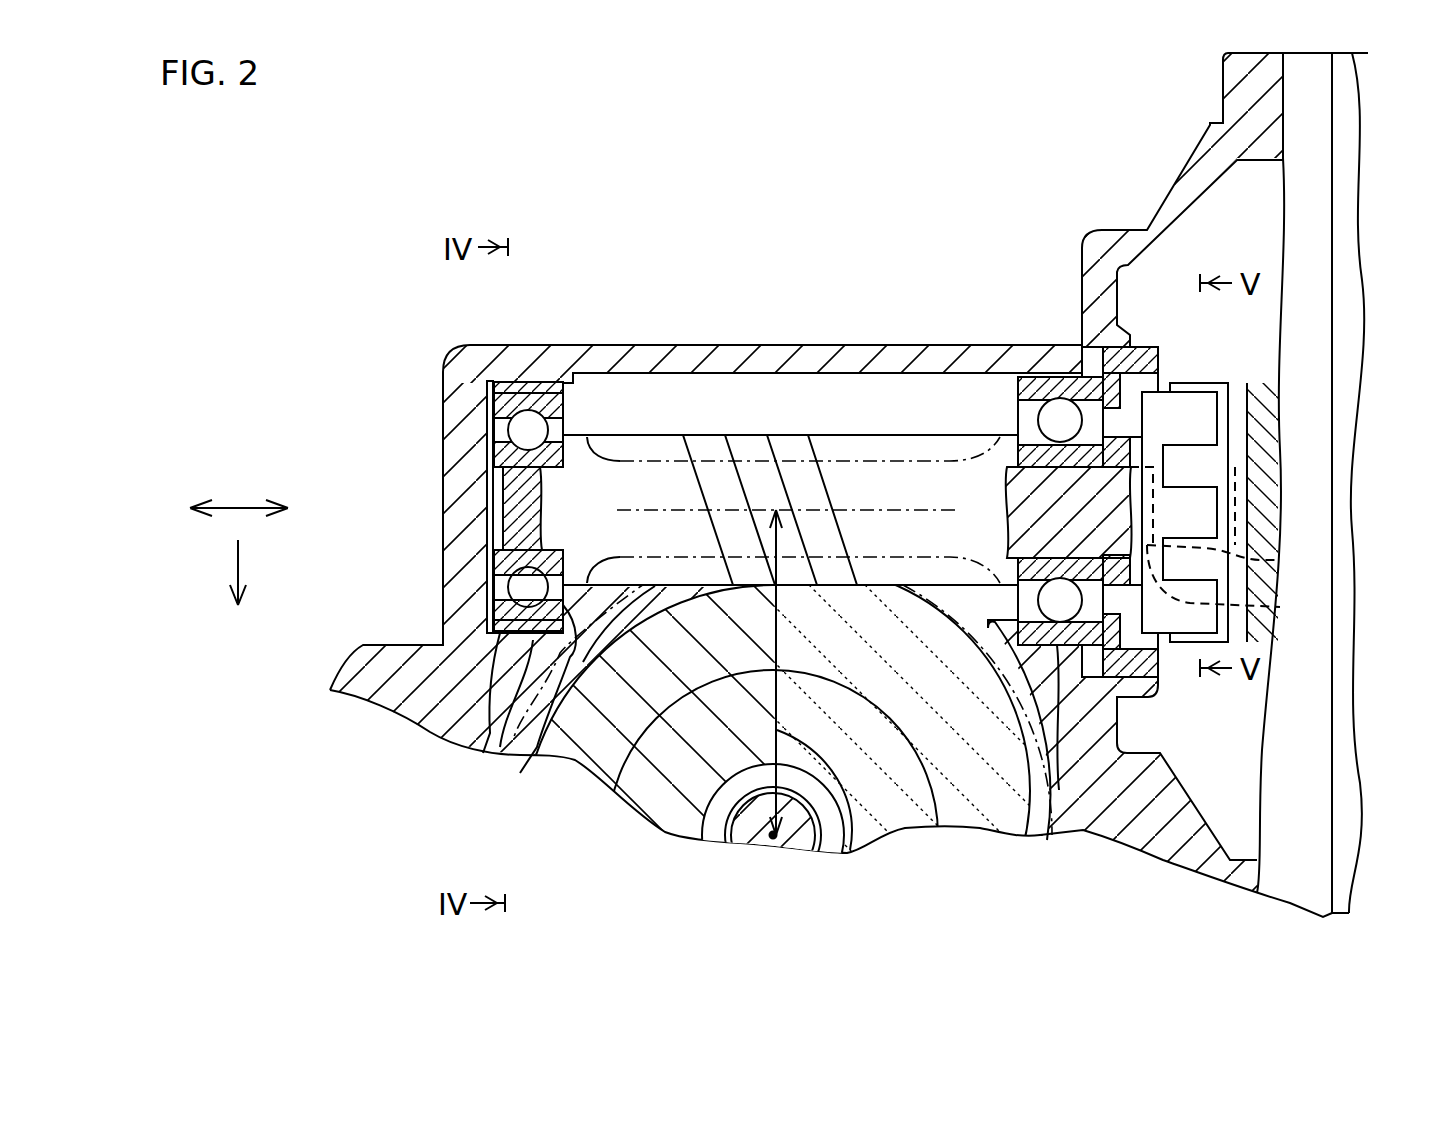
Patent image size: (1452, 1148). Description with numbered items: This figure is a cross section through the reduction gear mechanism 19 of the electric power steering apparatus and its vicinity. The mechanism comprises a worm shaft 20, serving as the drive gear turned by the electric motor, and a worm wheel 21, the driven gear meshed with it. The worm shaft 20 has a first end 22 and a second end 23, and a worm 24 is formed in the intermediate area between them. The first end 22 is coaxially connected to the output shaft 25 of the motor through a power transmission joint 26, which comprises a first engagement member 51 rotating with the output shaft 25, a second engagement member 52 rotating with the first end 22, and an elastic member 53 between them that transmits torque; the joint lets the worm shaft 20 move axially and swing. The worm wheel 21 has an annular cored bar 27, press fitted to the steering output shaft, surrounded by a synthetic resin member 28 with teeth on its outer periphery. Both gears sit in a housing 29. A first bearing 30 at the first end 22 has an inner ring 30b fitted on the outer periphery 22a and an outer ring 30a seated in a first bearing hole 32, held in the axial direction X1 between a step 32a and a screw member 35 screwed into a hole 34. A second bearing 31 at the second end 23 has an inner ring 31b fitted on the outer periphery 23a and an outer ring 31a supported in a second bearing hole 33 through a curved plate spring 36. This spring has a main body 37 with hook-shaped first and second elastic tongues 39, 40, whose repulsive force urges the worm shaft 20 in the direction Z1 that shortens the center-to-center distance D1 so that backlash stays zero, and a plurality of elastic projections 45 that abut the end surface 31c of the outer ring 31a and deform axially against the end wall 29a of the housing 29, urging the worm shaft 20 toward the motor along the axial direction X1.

The reduction gear mechanism 19 is at (745, 420).
The worm shaft 20 is at (800, 432).
The worm wheel 21 is at (983, 830).
The first end 22 is at (1280, 570).
The outer periphery 22a is at (1280, 607).
The second end 23 is at (522, 524).
The outer periphery 23a is at (505, 565).
The worm 24 is at (832, 450).
The output shaft 25 is at (1280, 540).
The power transmission joint 26 is at (1245, 380).
The cored bar 27 is at (777, 818).
The synthetic resin member 28 is at (580, 765).
The housing 29 is at (1188, 860).
The end wall 29a is at (465, 490).
The first bearing 30 is at (1020, 405).
The outer ring 30a is at (1050, 385).
The inner ring 30b is at (1012, 378).
The second bearing 31 is at (552, 425).
The outer ring 31a is at (563, 398).
The inner ring 31b is at (500, 460).
The end surface 31c is at (496, 408).
The first bearing hole 32 is at (1060, 395).
The step 32a is at (1050, 680).
The second bearing hole 33 is at (528, 745).
The hole 34 is at (1095, 345).
The screw member 35 is at (1148, 345).
The curved plate spring 36 is at (487, 383).
The main body 37 is at (478, 738).
The first elastic tongue 39 is at (500, 383).
The second elastic tongue 40 is at (518, 385).
The elastic projections 45 is at (445, 715).
The first engagement member 51 is at (1248, 430).
The second engagement member 52 is at (1183, 395).
The elastic member 53 is at (1210, 470).
The center-to-center distance D1 is at (835, 832).
The axial direction X1 is at (238, 508).
The direction Z1 is at (235, 560).